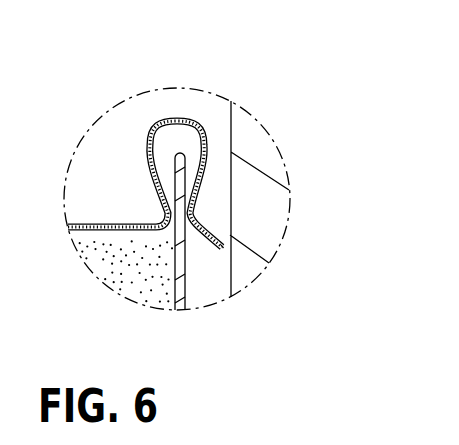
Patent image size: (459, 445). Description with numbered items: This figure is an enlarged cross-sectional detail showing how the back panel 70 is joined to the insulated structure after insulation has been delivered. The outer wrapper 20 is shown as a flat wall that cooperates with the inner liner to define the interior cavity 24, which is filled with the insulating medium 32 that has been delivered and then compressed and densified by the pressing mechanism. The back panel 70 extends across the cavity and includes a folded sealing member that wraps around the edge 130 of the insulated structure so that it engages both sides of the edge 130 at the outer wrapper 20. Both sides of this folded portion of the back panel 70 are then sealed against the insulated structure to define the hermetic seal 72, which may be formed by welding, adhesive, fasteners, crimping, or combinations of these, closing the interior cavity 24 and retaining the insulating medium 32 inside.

The edge 130 is at (187, 152).
The back panel 70 is at (112, 224).
The seal 72 is at (200, 197).
The outer wrapper 20 is at (188, 275).
The insulating medium 32 is at (129, 250).
The interior cavity 24 is at (102, 287).